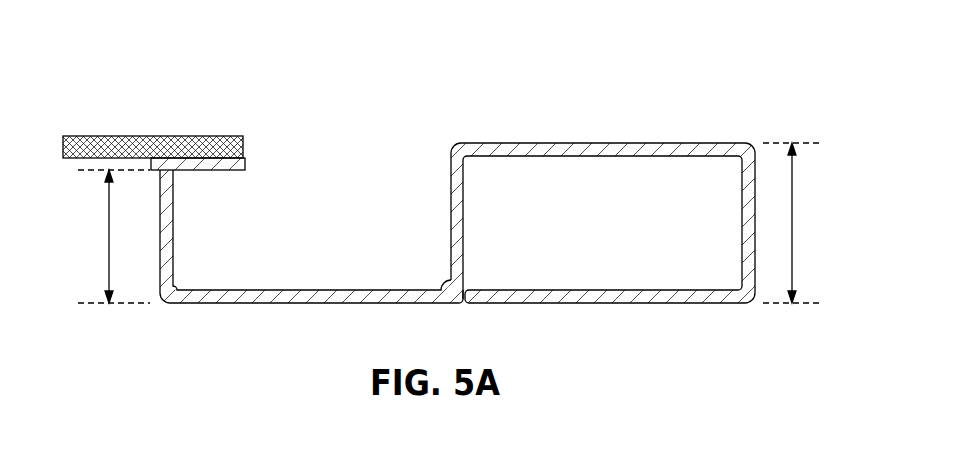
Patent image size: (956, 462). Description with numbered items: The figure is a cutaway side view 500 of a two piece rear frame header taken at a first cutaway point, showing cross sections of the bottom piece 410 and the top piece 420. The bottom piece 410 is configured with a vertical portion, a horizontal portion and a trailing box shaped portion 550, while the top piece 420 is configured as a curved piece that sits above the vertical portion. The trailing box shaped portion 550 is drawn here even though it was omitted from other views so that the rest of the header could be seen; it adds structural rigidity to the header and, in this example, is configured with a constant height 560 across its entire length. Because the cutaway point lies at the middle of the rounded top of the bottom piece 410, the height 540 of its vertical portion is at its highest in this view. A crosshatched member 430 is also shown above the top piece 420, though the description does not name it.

The bottom piece 410 is at (306, 255).
The top piece 420 is at (214, 183).
The top plate 430 is at (158, 123).
The cutaway side view 500 is at (478, 231).
The height 540 is at (123, 245).
The trailing box shaped portion 550 is at (603, 199).
The constant height 560 is at (804, 229).